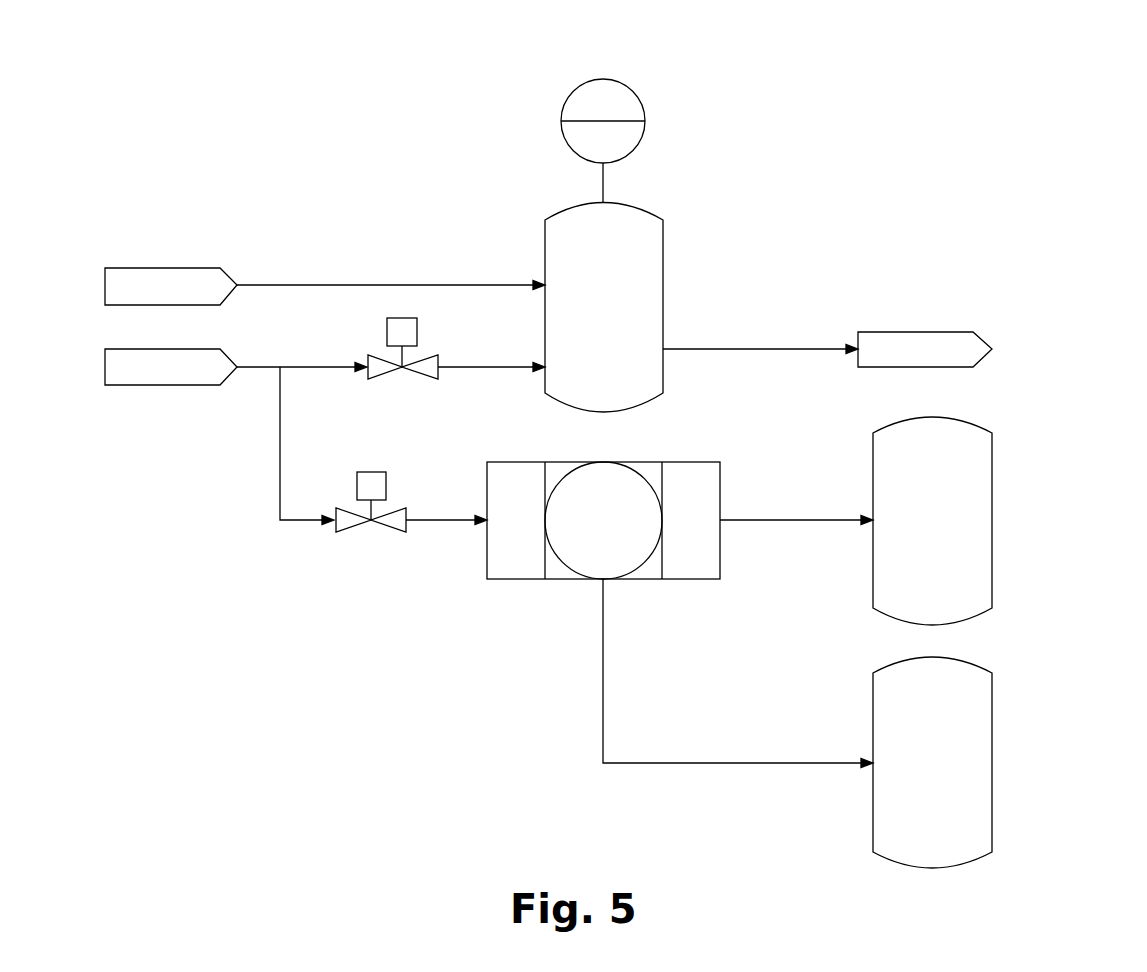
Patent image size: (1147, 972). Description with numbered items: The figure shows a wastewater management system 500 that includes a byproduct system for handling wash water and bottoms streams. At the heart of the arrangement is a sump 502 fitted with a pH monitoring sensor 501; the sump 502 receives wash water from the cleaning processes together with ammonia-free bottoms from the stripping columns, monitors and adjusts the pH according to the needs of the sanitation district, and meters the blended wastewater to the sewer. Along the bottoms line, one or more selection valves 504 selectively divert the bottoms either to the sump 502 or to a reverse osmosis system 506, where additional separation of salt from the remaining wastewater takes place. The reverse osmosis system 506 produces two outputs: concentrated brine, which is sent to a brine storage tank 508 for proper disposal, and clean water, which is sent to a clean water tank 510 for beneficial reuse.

The wastewater management system 500 is at (622, 443).
The pH monitoring sensor 501 is at (643, 103).
The sump 502 is at (663, 268).
The selection valves 504 is at (386, 478).
The reverse osmosis system 506 is at (705, 462).
The brine storage tank 508 is at (992, 483).
The clean water tank 510 is at (992, 725).